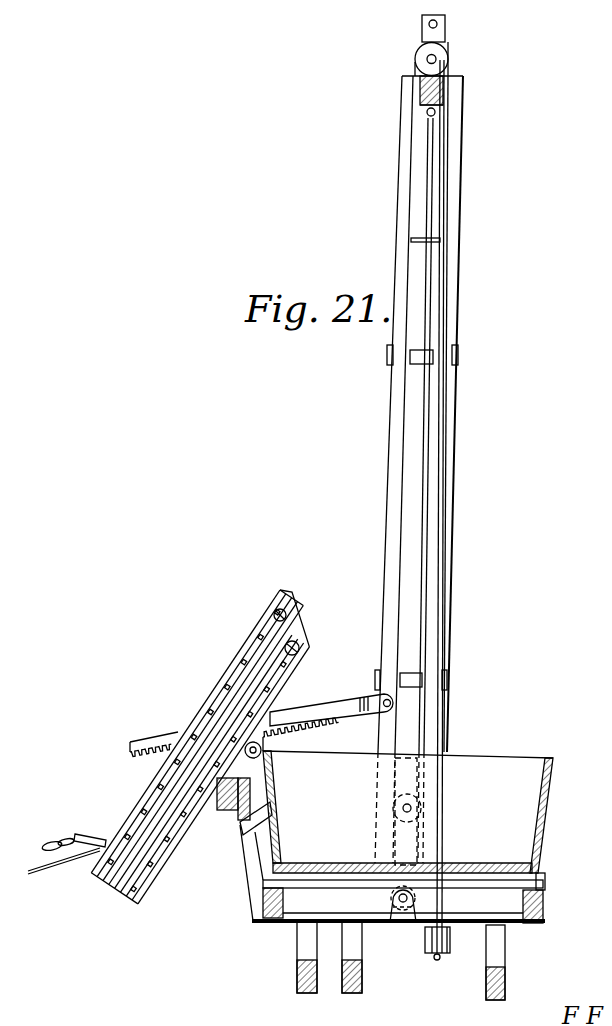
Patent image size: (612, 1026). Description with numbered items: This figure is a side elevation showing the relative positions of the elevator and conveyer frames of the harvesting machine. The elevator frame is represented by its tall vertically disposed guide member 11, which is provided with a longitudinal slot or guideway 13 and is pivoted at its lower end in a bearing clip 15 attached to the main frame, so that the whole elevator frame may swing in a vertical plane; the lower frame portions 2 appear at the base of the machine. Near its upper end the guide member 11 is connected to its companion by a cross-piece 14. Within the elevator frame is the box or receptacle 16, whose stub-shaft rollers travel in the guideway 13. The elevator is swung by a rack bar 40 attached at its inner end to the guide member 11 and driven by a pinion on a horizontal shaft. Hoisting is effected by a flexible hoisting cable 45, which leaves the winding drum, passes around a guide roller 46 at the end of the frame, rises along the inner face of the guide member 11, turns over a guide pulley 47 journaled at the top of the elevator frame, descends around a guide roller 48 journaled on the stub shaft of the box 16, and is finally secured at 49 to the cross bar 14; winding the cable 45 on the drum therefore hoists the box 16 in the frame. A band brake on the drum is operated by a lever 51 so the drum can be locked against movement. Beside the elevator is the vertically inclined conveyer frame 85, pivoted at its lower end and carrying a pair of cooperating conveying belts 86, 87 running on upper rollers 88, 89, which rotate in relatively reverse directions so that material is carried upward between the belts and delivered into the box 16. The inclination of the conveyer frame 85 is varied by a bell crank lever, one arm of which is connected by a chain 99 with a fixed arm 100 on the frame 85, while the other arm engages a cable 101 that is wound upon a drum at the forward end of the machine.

The base frame 2 is at (263, 900).
The guide member 11 is at (458, 322).
The guideway 13 is at (412, 440).
The cross-piece 14 is at (444, 92).
The bearing clip 15 is at (405, 922).
The box 16 is at (494, 757).
The rack bar 40 is at (318, 712).
The hoisting cable 45 is at (446, 274).
The guide roller 46 is at (437, 960).
The guide pulley 47 is at (440, 58).
The guide roller 48 is at (412, 808).
The cable securing point 49 is at (427, 112).
The lever 51 is at (232, 806).
The conveyer frame 85 is at (180, 728).
The conveying belt 86 is at (200, 712).
The conveying belt 87 is at (178, 848).
The upper roller 88 is at (275, 612).
The upper roller 89 is at (300, 650).
The chain 99 is at (48, 842).
The fixed arm 100 is at (95, 836).
The cable 101 is at (66, 858).